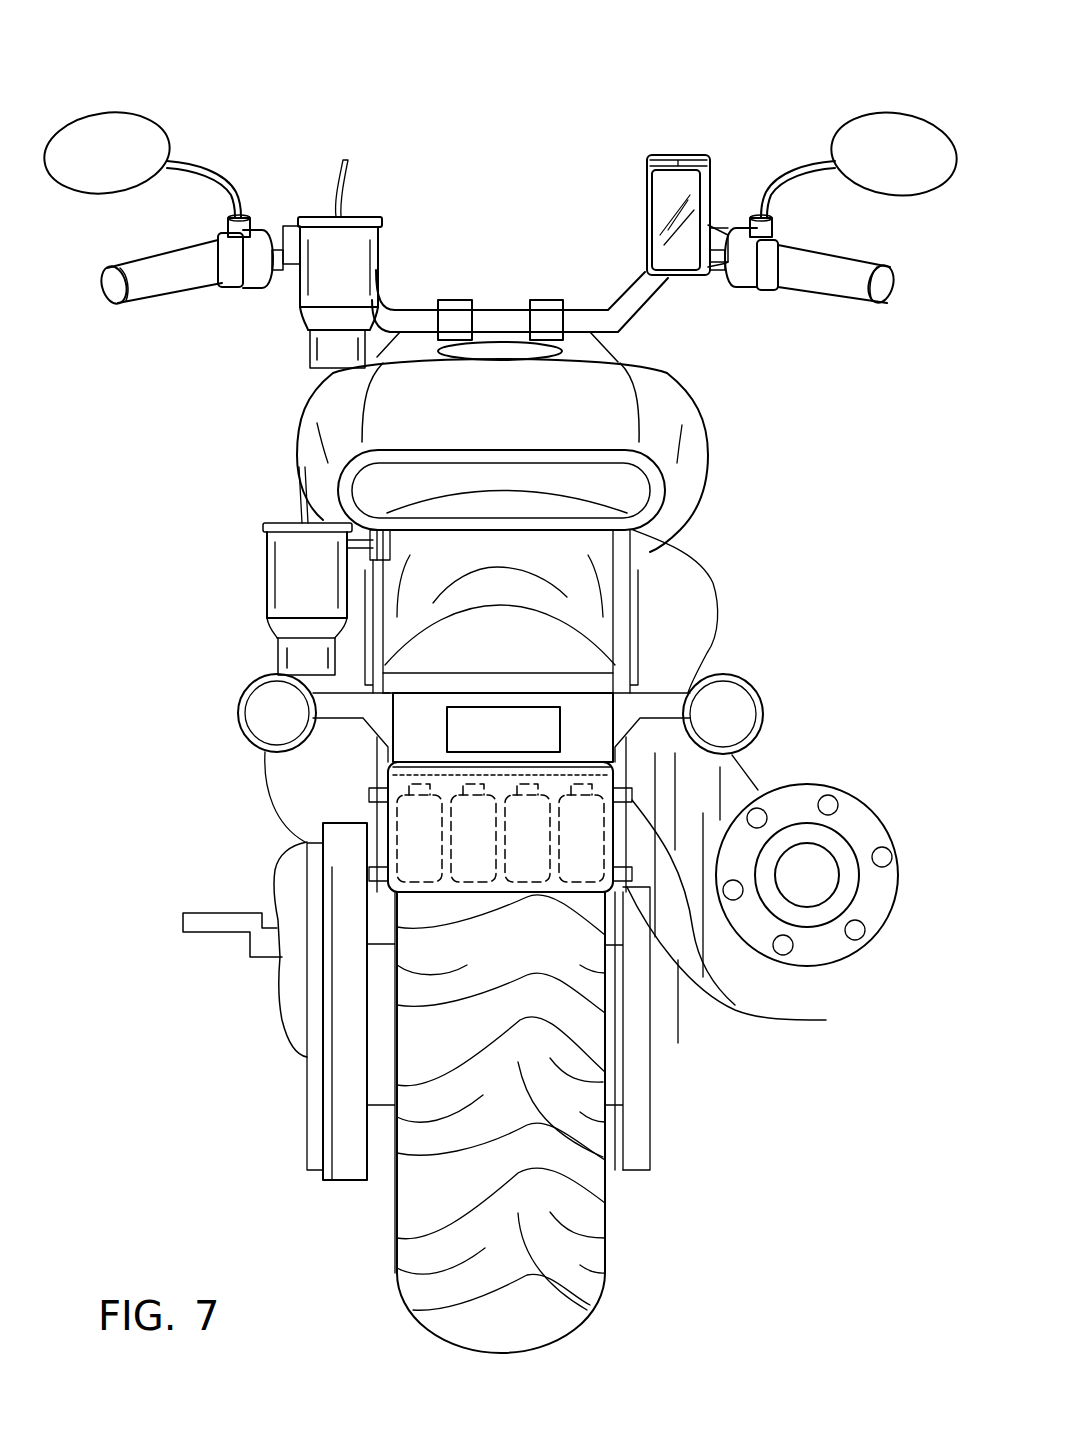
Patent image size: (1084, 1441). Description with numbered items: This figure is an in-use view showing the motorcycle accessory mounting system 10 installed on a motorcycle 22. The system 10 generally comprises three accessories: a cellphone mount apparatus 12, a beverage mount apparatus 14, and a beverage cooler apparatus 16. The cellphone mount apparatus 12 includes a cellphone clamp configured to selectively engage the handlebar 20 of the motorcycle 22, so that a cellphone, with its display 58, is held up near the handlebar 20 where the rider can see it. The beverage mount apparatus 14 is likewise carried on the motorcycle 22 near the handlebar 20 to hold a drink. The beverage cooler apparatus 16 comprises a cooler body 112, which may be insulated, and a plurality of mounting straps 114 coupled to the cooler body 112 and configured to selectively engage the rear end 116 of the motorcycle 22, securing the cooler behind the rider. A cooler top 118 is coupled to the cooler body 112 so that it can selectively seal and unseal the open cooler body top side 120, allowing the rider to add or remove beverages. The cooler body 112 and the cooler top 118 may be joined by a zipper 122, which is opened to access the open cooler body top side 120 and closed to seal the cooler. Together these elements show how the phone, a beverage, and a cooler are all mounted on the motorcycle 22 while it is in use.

The motorcycle accessory mounting system 10 is at (563, 115).
The cellphone mount apparatus 12 is at (685, 137).
The display screen 58 is at (683, 190).
The beverage mount apparatus 14 is at (398, 205).
The beverage cooler apparatus 16 is at (316, 783).
The handlebar 20 is at (598, 309).
The motorcycle 22 is at (683, 453).
The rear end 116 is at (585, 713).
The cooler top 118 is at (613, 768).
The zipper 122 is at (616, 790).
The open cooler body top side 120 is at (632, 795).
The mounting straps 114 is at (623, 1107).
The cooler body 112 is at (540, 892).